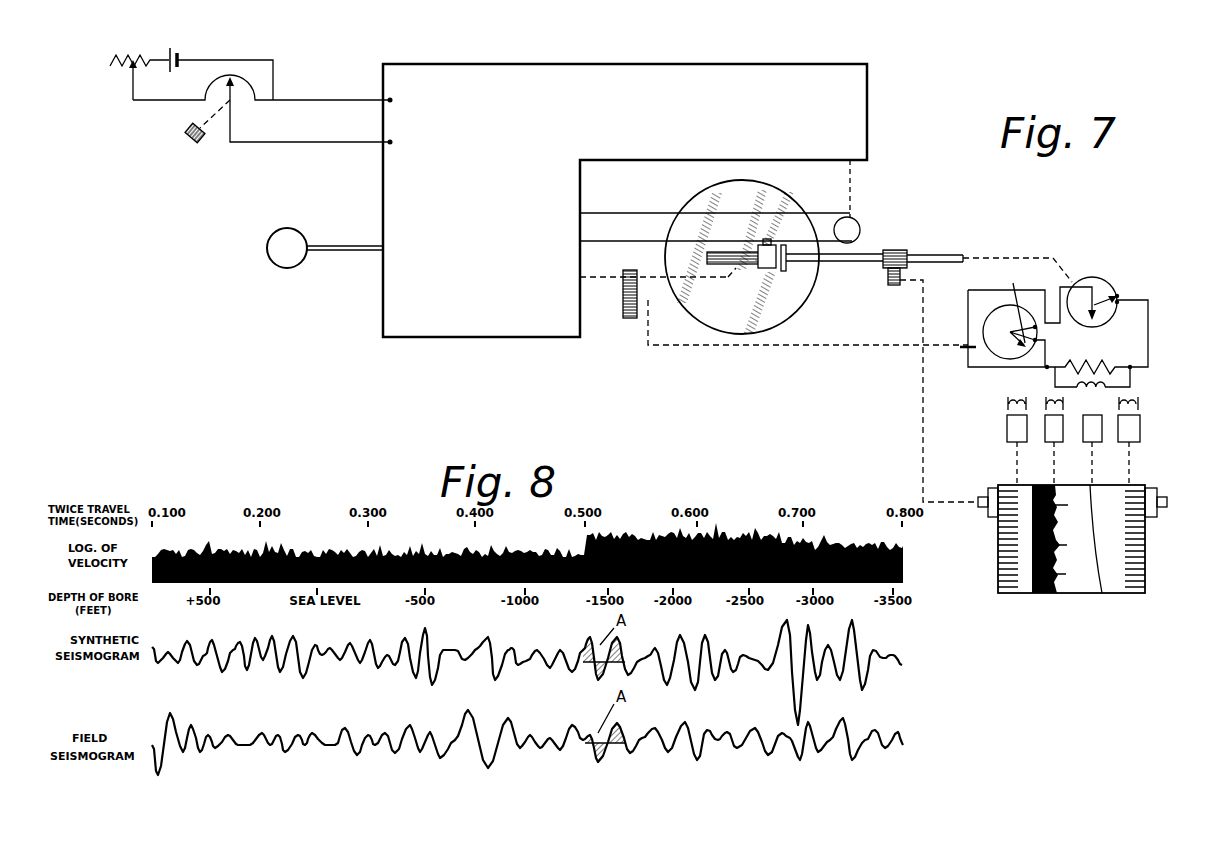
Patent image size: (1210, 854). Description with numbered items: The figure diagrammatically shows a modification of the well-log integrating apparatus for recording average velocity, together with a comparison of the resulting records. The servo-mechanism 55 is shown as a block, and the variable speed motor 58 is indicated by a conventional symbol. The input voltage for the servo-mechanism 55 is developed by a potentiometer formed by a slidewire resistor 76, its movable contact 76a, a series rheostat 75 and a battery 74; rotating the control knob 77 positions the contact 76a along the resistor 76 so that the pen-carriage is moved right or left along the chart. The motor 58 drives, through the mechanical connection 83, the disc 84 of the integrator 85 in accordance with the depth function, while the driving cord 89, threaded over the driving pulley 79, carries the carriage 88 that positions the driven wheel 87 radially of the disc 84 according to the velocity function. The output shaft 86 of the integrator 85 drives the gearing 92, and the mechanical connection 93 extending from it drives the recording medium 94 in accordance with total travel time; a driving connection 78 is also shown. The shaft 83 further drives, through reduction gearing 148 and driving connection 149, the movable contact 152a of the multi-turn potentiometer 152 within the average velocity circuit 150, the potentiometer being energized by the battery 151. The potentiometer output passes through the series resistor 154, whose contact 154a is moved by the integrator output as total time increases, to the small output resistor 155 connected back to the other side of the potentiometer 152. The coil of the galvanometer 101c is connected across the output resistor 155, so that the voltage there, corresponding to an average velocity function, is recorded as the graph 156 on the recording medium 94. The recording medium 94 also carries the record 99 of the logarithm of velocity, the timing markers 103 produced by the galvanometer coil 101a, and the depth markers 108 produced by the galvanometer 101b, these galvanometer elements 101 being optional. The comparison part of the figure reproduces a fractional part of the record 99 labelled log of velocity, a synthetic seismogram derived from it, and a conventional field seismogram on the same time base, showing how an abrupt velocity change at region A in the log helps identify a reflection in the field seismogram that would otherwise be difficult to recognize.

In FIG. 7, the servo-mechanism 55 is at (625, 200).
In FIG. 7, the variable speed motor 58 is at (302, 234).
In FIG. 7, the battery 74 is at (180, 55).
In FIG. 7, the series resistor or rheostat 75 is at (118, 63).
In FIG. 7, the resistor 76 is at (252, 85).
In FIG. 7, the movable contact 76a is at (232, 90).
In FIG. 7, the control knob 77 is at (198, 142).
In FIG. 7, the driving connection 78 is at (852, 198).
In FIG. 7, the driving pulley 79 is at (858, 228).
In FIG. 7, the mechanical connection 83 is at (345, 252).
In FIG. 7, the disc 84 is at (773, 208).
In FIG. 7, the integrator 85 is at (831, 328).
In FIG. 7, the output shaft 86 is at (858, 266).
In FIG. 7, the driven wheel 87 is at (784, 271).
In FIG. 7, the carriage 88 is at (762, 270).
In FIG. 7, the driving cord 89 is at (629, 240).
In FIG. 7, the gearing 92 is at (907, 252).
In FIG. 7, the mechanical connection 93 is at (921, 440).
In FIG. 7, the recording medium 94 is at (1145, 583).
In FIG. 7, the record 99 is at (1052, 589).
In FIG. 8, the record 99 is at (695, 541).
In FIG. 7, the galvanometer 101 is at (1050, 421).
In FIG. 7, the galvanometer coil 101a is at (1007, 423).
In FIG. 7, the galvanometer 101b is at (1140, 425).
In FIG. 7, the galvanometer 101c is at (1100, 418).
In FIG. 7, the timing lines or markers 103 is at (1008, 543).
In FIG. 7, the depth markers 108 is at (1127, 558).
In FIG. 7, the reduction gearing 148 is at (625, 306).
In FIG. 7, the driving connection 149 is at (740, 350).
In FIG. 7, the switching circuit 150 is at (1038, 260).
In FIG. 7, the battery 151 is at (965, 352).
In FIG. 7, the potentiometer 152 is at (985, 322).
In FIG. 7, the movable contact 152a is at (1015, 303).
In FIG. 7, the series resistor 154 is at (1118, 309).
In FIG. 7, the contact 154a is at (1100, 306).
In FIG. 7, the output resistor 155 is at (1083, 363).
In FIG. 7, the graph 156 is at (1102, 574).